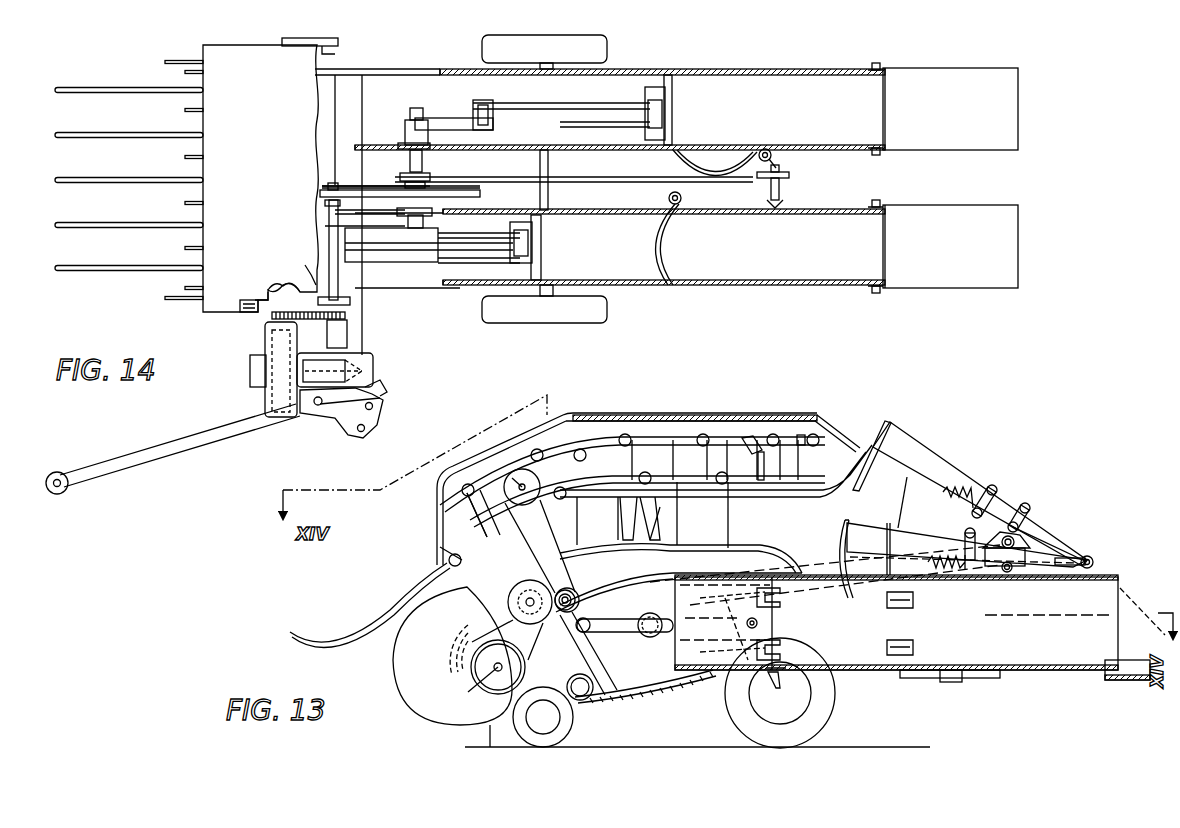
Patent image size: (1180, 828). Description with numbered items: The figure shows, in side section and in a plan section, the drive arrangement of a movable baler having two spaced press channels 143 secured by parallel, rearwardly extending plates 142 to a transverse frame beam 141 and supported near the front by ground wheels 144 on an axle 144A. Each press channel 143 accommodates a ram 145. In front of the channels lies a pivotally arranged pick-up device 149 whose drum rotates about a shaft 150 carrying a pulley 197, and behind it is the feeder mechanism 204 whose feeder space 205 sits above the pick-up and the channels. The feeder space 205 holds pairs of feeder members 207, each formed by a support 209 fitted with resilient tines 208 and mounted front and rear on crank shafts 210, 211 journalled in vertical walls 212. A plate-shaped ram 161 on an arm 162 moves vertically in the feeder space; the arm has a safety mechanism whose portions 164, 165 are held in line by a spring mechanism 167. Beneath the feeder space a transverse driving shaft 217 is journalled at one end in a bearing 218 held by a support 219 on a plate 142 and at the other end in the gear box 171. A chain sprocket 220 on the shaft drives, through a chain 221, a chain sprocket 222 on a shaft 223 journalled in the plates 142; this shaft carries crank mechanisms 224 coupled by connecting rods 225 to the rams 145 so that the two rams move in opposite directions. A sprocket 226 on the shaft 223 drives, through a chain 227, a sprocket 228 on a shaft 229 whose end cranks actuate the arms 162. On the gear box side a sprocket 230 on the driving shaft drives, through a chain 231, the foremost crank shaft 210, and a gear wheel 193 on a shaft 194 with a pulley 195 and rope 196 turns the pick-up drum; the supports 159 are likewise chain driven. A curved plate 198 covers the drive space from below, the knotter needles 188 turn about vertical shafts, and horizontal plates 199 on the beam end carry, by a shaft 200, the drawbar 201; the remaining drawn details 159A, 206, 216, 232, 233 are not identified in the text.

In FIG. 14, the frame beam 141 is at (358, 103).
In FIG. 13, the frame beam 141 is at (585, 700).
In FIG. 14, the plates 142 is at (432, 68).
In FIG. 13, the plates 142 is at (575, 724).
In FIG. 14, the press channel 143 is at (808, 68).
In FIG. 13, the press channel 143 is at (1052, 670).
In FIG. 14, the ground wheels 144 is at (607, 47).
In FIG. 13, the ground wheels 144 is at (830, 728).
In FIG. 13, the axle 144A is at (778, 690).
In FIG. 14, the ram 145 is at (672, 128).
In FIG. 13, the ram 145 is at (780, 660).
In FIG. 13, the pick-up device 149 is at (395, 688).
In FIG. 14, the shaft 150 is at (258, 296).
In FIG. 13, the shaft 150 is at (470, 676).
In FIG. 13, the supports 159 is at (792, 497).
In FIG. 14, the tine 159A is at (88, 272).
In FIG. 13, the tine 159A is at (385, 614).
In FIG. 13, the plate-shaped ram 161 is at (860, 490).
In FIG. 13, the arm 162 is at (938, 450).
In FIG. 13, the portion of the arm 164 is at (970, 485).
In FIG. 13, the portion of the arm 165 is at (1010, 508).
In FIG. 13, the spring mechanism 167 is at (920, 515).
In FIG. 14, the gear box 171 is at (373, 363).
In FIG. 14, the needles 188 is at (676, 165).
In FIG. 14, the gear wheel 193 is at (272, 316).
In FIG. 13, the gear wheel 193 is at (522, 604).
In FIG. 13, the shaft 194 is at (488, 610).
In FIG. 13, the pulley 195 is at (472, 638).
In FIG. 13, the rope 196 is at (462, 658).
In FIG. 14, the pulley 197 is at (240, 304).
In FIG. 13, the curved plate 198 is at (660, 698).
In FIG. 14, the horizontal plates 199 is at (352, 432).
In FIG. 14, the shaft 200 is at (318, 407).
In FIG. 13, the shaft 200 is at (580, 598).
In FIG. 14, the drawbar 201 is at (128, 464).
In FIG. 14, the feeder mechanism 204 is at (205, 312).
In FIG. 13, the feeder mechanism 204 is at (672, 411).
In FIG. 13, the feeder space 205 is at (693, 420).
In FIG. 13, the lower rail 206 is at (725, 560).
In FIG. 13, the feeder members 207 is at (800, 435).
In FIG. 13, the resilient tines 208 is at (618, 450).
In FIG. 13, the support 209 is at (653, 452).
In FIG. 13, the crank shaft 210 is at (507, 474).
In FIG. 13, the crank shaft 211 is at (742, 458).
In FIG. 14, the vertical walls 212 is at (337, 52).
In FIG. 13, the blade 216 is at (866, 447).
In FIG. 14, the driving shaft 217 is at (325, 226).
In FIG. 14, the bearing 218 is at (325, 203).
In FIG. 14, the support 219 is at (335, 212).
In FIG. 13, the support 219 is at (650, 612).
In FIG. 14, the chain sprocket 220 is at (316, 186).
In FIG. 14, the chain 221 is at (320, 190).
In FIG. 13, the chain 221 is at (610, 582).
In FIG. 14, the chain sprocket 222 is at (482, 194).
In FIG. 13, the chain sprocket 222 is at (687, 683).
In FIG. 14, the shaft 223 is at (414, 110).
In FIG. 13, the shaft 223 is at (677, 530).
In FIG. 14, the crank mechanisms 224 is at (458, 122).
In FIG. 13, the crank mechanisms 224 is at (622, 520).
In FIG. 14, the connecting rod 225 is at (530, 106).
In FIG. 13, the connecting rod 225 is at (655, 637).
In FIG. 14, the sprocket 226 is at (431, 172).
In FIG. 14, the chain 227 is at (600, 177).
In FIG. 13, the chain 227 is at (820, 620).
In FIG. 14, the sprocket 228 is at (789, 176).
In FIG. 13, the sprocket 228 is at (1030, 538).
In FIG. 14, the shaft 229 is at (770, 185).
In FIG. 14, the sprocket 230 is at (350, 301).
In FIG. 14, the chain 231 is at (310, 266).
In FIG. 13, the chain 231 is at (495, 512).
In FIG. 14, the housing outline 232 is at (290, 282).
In FIG. 13, the housing outline 232 is at (477, 463).
In FIG. 14, the hub 233 is at (347, 324).